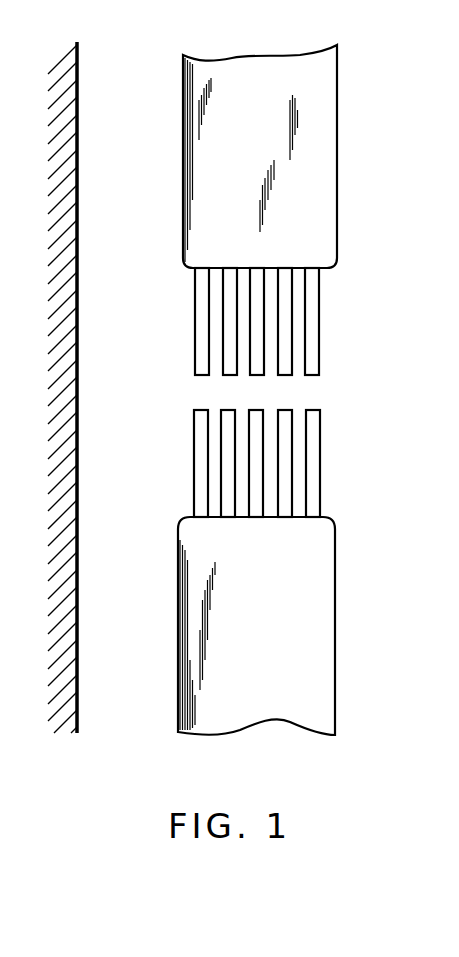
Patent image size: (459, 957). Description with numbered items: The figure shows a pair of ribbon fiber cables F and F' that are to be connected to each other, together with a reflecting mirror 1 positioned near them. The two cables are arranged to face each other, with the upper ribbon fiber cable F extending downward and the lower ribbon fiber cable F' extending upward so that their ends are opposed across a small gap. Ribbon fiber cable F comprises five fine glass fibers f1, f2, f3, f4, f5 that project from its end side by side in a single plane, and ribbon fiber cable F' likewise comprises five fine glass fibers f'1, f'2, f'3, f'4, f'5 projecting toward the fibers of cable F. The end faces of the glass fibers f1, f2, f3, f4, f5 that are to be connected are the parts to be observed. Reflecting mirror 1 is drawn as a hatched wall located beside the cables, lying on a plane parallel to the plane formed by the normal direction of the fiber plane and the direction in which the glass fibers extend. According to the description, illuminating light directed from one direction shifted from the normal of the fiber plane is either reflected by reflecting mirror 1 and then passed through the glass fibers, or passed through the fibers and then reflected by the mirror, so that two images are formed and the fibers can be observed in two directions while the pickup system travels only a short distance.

The reflecting mirror 1 is at (77, 68).
The ribbon fiber cable F is at (278, 156).
The ribbon fiber cable F' is at (277, 626).
The glass fiber f1 is at (199, 370).
The glass fiber f2 is at (232, 366).
The glass fiber f3 is at (259, 366).
The glass fiber f4 is at (286, 366).
The glass fiber f5 is at (312, 366).
The glass fiber f'1 is at (182, 463).
The glass fiber f'2 is at (196, 463).
The glass fiber f'3 is at (210, 463).
The glass fiber f'4 is at (319, 463).
The glass fiber f'5 is at (333, 463).